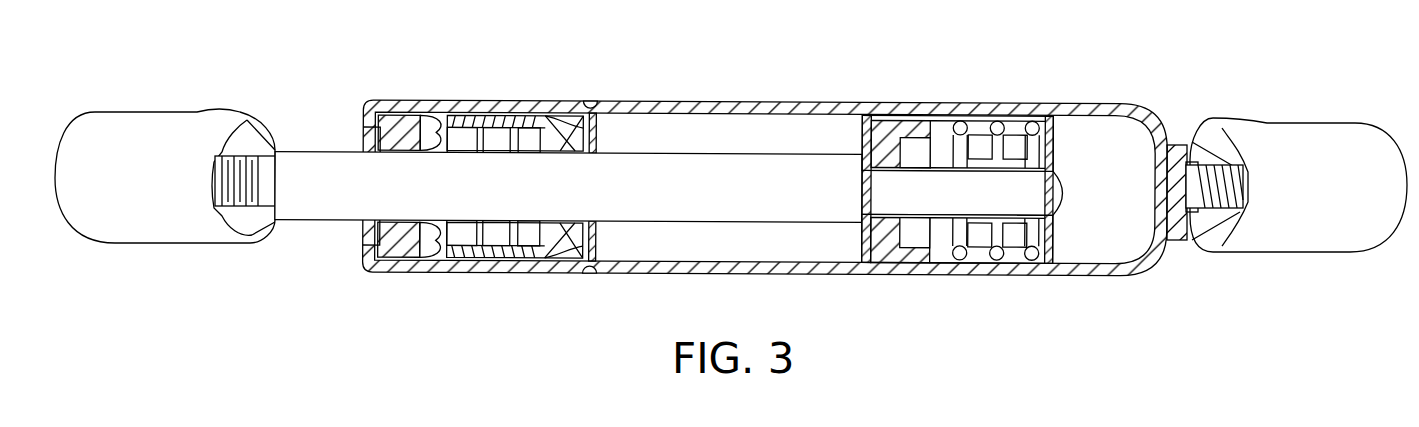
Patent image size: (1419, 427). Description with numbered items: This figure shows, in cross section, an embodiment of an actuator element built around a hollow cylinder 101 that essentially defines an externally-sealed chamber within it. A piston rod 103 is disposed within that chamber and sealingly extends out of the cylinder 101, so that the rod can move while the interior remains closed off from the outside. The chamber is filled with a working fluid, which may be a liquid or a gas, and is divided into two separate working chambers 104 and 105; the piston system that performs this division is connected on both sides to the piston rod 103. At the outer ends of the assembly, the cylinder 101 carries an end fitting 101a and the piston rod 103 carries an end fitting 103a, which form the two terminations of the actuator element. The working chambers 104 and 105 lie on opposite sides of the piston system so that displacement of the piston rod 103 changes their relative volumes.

The hollow cylinder 101 is at (687, 104).
The cylinder end fitting 101a is at (1250, 142).
The piston rod 103 is at (730, 182).
The rod end fitting 103a is at (203, 142).
The working chamber 104 is at (623, 133).
The working chamber 105 is at (1102, 150).